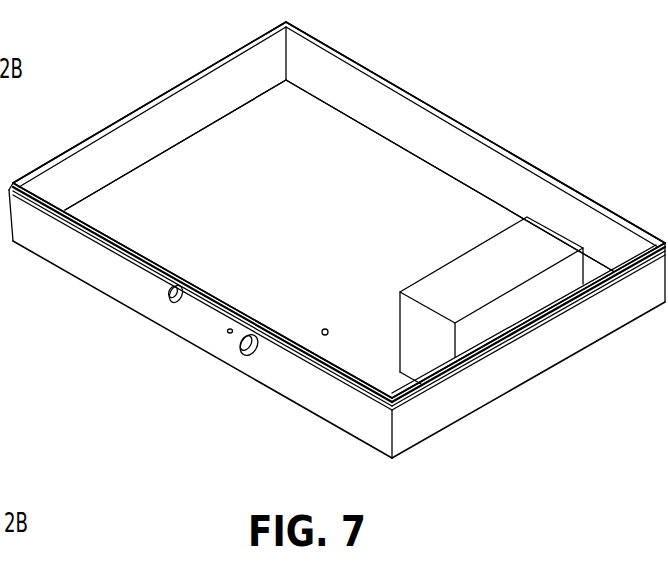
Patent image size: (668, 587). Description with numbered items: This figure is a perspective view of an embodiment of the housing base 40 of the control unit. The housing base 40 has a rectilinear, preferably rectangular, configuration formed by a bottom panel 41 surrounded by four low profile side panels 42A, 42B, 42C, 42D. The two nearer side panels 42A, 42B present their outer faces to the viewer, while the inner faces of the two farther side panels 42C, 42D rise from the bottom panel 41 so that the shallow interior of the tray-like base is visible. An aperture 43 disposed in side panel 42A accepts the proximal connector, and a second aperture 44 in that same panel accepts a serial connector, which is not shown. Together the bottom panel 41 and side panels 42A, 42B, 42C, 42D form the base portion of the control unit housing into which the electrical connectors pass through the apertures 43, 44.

The housing base 40 is at (490, 118).
The bottom panel 41 is at (265, 282).
The side panel 42A is at (332, 397).
The side panel 42B is at (491, 379).
The side panel 42C is at (447, 152).
The side panel 42D is at (200, 110).
The aperture 43 is at (246, 357).
The aperture 44 is at (170, 301).